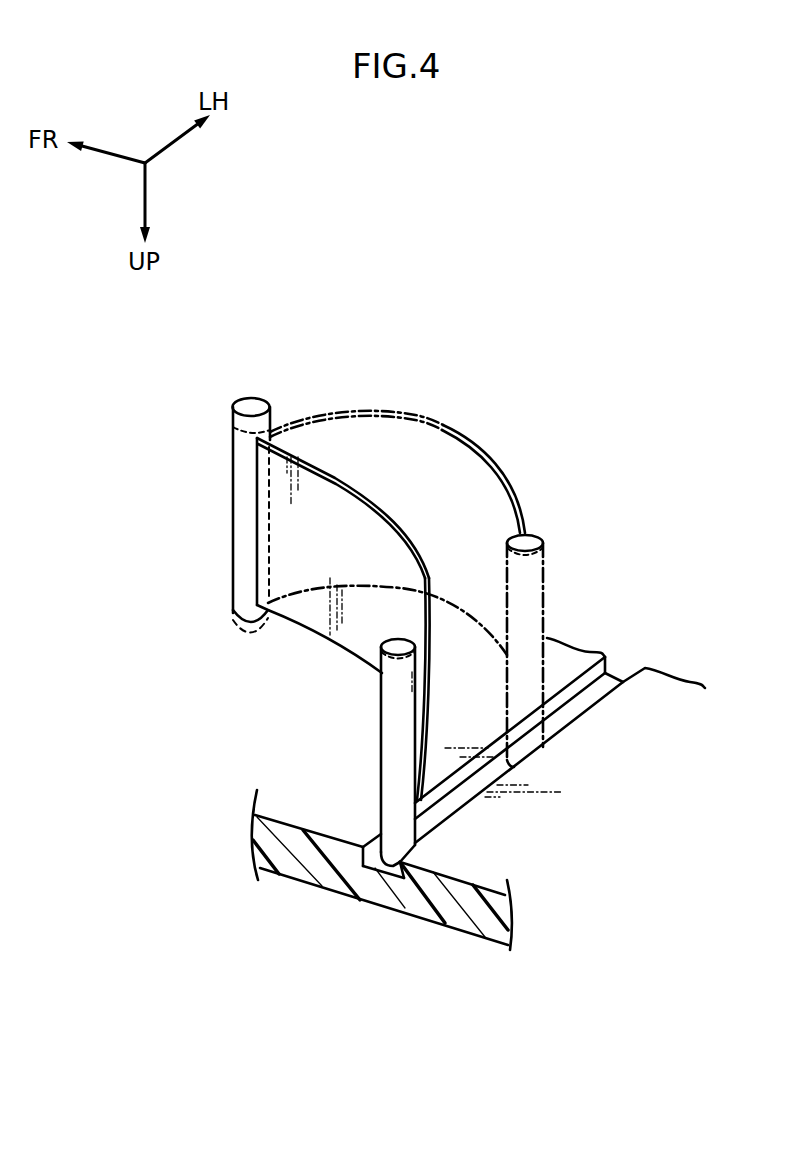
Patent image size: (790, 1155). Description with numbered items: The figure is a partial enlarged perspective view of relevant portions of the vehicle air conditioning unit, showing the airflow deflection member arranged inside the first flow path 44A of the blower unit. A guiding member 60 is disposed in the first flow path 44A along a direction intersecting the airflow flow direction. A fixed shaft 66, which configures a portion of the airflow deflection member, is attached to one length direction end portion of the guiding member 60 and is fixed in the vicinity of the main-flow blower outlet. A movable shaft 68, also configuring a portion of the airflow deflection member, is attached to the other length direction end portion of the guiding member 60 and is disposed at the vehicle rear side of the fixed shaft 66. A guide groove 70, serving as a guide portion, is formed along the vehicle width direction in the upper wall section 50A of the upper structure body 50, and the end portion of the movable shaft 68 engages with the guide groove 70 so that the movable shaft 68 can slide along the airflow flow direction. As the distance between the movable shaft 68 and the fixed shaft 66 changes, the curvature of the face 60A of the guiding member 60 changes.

The first flow path 44A is at (313, 722).
The upper structure body 50 is at (382, 890).
The upper wall section 50A is at (328, 878).
The guiding member 60 is at (421, 585).
The face of the guiding member 60A is at (326, 496).
The fixed shaft 66 is at (237, 505).
The movable shaft 68 is at (543, 596).
The guide groove 70 is at (445, 806).